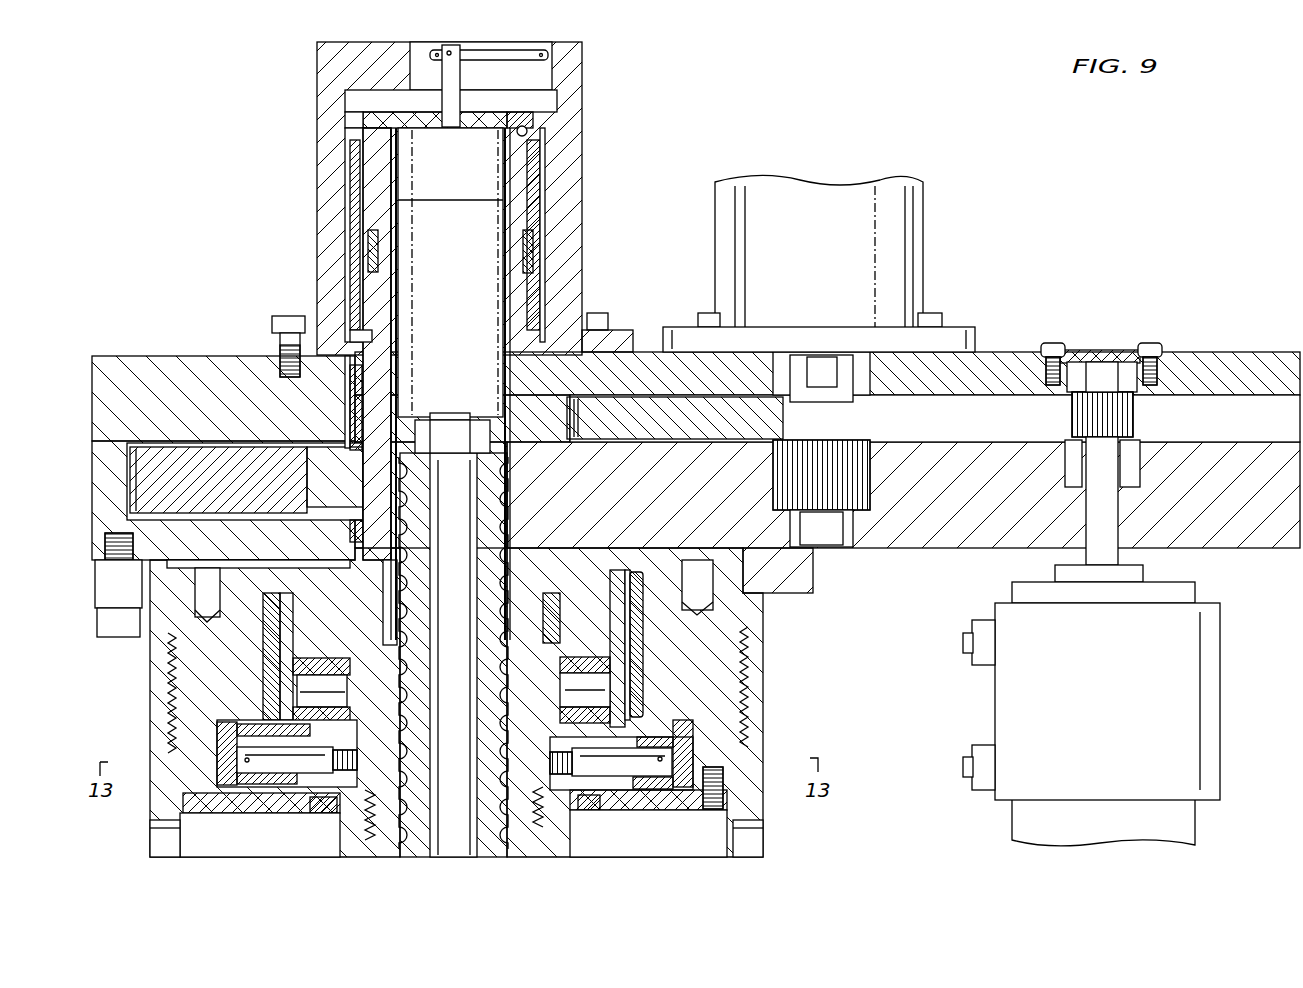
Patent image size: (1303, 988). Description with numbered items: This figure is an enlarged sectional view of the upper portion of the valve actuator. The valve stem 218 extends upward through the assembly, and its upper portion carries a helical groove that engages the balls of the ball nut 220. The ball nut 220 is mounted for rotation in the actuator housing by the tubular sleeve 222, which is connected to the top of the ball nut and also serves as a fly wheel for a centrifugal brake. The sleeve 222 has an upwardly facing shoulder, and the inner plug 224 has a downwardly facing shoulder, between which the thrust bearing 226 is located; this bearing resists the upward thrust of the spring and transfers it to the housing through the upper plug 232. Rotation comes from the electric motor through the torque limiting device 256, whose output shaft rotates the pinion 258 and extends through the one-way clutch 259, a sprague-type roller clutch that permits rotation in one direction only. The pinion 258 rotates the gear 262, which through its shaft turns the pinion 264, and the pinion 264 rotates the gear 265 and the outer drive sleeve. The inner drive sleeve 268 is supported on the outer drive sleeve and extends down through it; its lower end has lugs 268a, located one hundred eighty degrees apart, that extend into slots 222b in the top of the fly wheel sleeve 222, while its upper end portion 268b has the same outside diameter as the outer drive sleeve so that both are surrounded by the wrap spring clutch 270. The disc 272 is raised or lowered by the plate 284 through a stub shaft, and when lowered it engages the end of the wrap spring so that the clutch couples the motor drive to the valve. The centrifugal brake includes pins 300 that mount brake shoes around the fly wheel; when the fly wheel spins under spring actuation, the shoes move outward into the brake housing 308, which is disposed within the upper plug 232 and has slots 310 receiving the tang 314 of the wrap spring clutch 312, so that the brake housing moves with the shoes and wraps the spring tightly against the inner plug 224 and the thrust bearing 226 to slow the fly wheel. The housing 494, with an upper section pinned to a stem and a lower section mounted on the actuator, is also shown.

The valve stem 218 is at (512, 478).
The ball nut 220 is at (540, 846).
The tubular sleeve 222 is at (597, 690).
The slots 222b is at (520, 652).
The inner plug 224 is at (282, 582).
The thrust bearing 226 is at (263, 672).
The upper plug 232 is at (748, 648).
The torque limiting device 256 is at (1188, 696).
The pinion 258 is at (1120, 408).
The one-way clutch 259 is at (1135, 461).
The gear 262 is at (983, 405).
The pinion 264 is at (855, 472).
The gear 265 is at (217, 462).
The inner drive sleeve 268 is at (385, 260).
The lugs 268a is at (543, 648).
The upper end portion 268b is at (373, 158).
The wrap spring clutch 270 is at (350, 188).
The disc 272 is at (508, 108).
The plate 284 is at (511, 50).
The pins 300 is at (288, 782).
The brake housing 308 is at (693, 752).
The slots 310 is at (748, 704).
The wrap spring clutch 312 is at (646, 624).
The tang 314 is at (640, 716).
The housing 494 is at (920, 236).